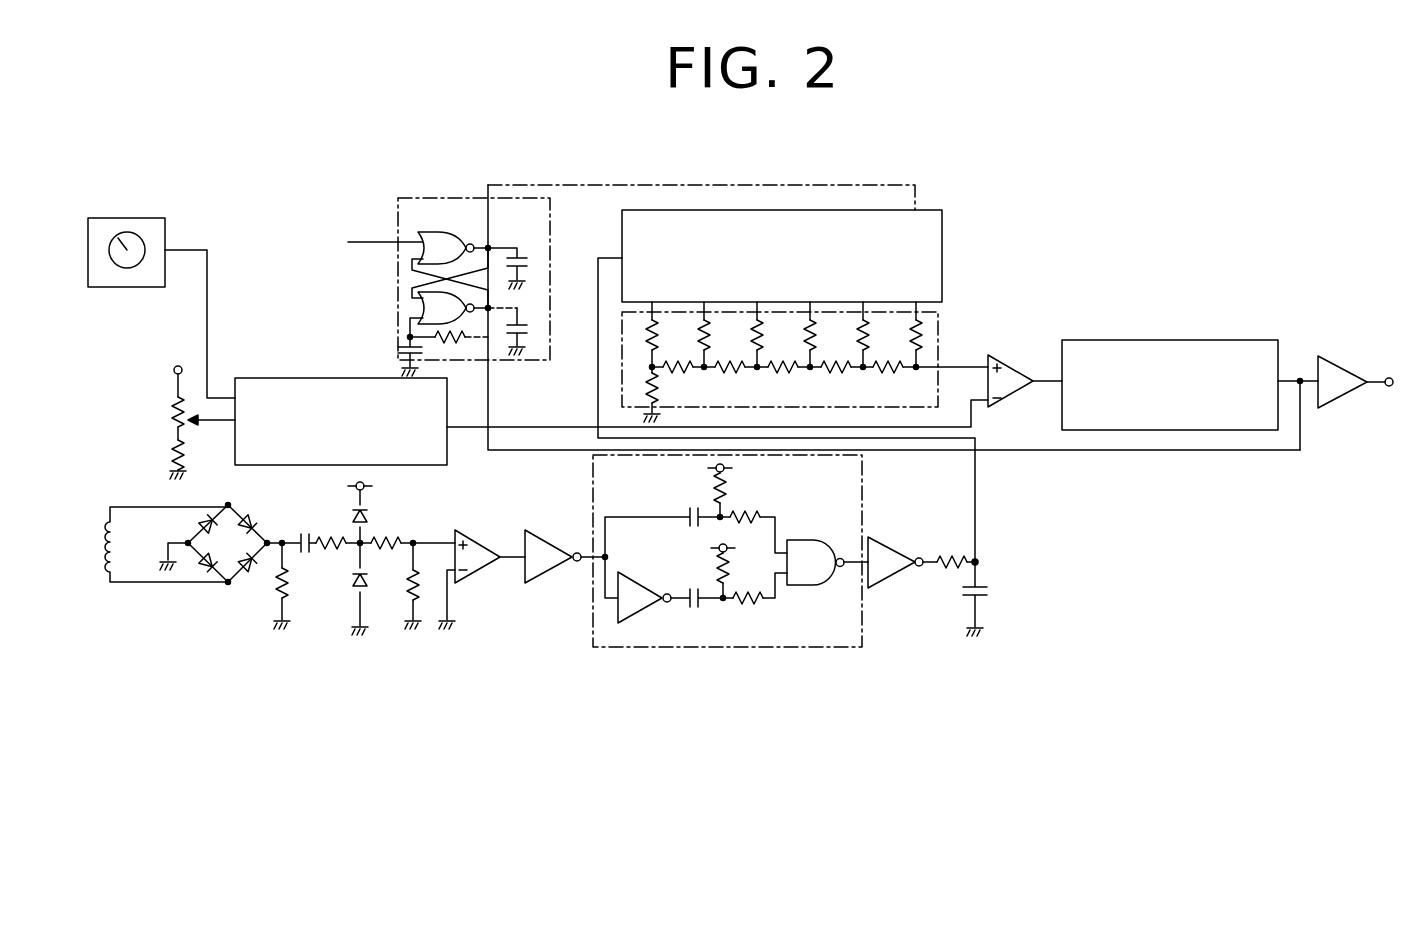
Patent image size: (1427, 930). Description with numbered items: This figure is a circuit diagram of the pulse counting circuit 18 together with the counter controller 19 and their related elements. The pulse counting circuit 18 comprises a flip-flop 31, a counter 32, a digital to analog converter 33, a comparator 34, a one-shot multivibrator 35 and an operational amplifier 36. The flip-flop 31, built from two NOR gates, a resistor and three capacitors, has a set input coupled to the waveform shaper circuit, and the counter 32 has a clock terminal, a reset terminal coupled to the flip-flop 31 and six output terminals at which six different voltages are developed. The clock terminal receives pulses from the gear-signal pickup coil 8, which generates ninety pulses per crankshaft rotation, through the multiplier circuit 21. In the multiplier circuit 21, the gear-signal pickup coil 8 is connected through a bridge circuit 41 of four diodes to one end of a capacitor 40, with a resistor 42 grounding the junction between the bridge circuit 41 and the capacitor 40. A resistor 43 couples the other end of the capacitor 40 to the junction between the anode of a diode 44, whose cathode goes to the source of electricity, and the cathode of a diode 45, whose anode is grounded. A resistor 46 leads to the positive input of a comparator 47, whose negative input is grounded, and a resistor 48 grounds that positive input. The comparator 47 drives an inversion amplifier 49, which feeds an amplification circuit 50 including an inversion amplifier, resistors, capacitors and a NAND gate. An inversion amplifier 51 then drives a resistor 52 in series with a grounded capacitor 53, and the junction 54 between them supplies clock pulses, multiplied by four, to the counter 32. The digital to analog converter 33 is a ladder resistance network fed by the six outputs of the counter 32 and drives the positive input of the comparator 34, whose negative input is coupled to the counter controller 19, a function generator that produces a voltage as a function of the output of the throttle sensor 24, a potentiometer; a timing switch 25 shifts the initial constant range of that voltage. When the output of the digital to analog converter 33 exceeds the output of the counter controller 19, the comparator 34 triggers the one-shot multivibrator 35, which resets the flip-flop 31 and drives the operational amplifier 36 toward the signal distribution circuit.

The gear-signal pickup coil 8 is at (97, 565).
The pulse counting circuit 18 is at (965, 195).
The counter controller 19 is at (318, 378).
The multiplier circuit 21 is at (715, 604).
The throttle sensor 24 is at (170, 425).
The timing switch 25 is at (131, 218).
The flip-flop 31 is at (550, 280).
The counter 32 is at (942, 232).
The digital to analog converter 33 is at (948, 348).
The comparator 34 is at (1000, 356).
The one-shot multivibrator 35 is at (1228, 340).
The operational amplifier 36 is at (1333, 362).
The capacitor 40 is at (301, 533).
The bridge circuit 41 is at (235, 584).
The resistor 42 is at (288, 600).
The resistor 43 is at (330, 536).
The diode 44 is at (373, 518).
The diode 45 is at (382, 596).
The resistor 46 is at (382, 533).
The comparator 47 is at (468, 533).
The resistor 48 is at (420, 604).
The inversion amplifier 49 is at (540, 533).
The amplification circuit 50 is at (632, 673).
The inversion amplifier 51 is at (885, 540).
The resistor 52 is at (950, 568).
The capacitor 53 is at (988, 594).
The junction 54 is at (982, 562).